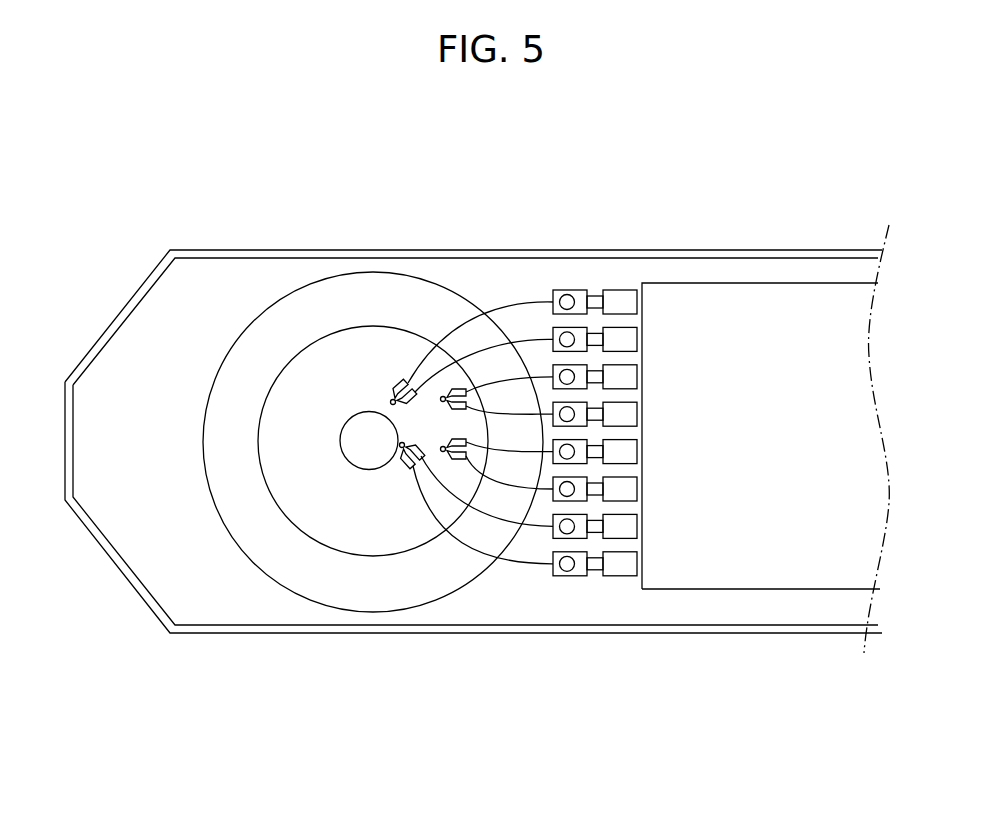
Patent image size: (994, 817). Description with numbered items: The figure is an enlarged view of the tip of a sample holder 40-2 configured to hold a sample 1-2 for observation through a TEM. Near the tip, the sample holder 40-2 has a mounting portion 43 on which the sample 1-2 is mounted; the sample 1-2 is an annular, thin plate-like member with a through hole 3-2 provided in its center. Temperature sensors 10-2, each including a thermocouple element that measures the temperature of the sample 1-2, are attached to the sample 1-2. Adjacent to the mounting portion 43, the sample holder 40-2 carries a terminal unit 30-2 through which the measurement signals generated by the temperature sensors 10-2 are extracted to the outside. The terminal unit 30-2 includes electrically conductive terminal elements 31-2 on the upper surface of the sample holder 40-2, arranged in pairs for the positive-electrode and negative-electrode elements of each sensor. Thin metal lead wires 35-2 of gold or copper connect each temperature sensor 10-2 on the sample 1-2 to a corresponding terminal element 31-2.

The sample holder 40-2 is at (231, 247).
The mounting portion 43 is at (270, 547).
The sample 1-2 is at (372, 320).
The through hole 3-2 is at (348, 449).
The temperature sensors 10-2 is at (390, 382).
The lead wires 35-2 is at (521, 340).
The terminal unit 30-2 is at (567, 280).
The terminal elements 31-2 is at (620, 360).